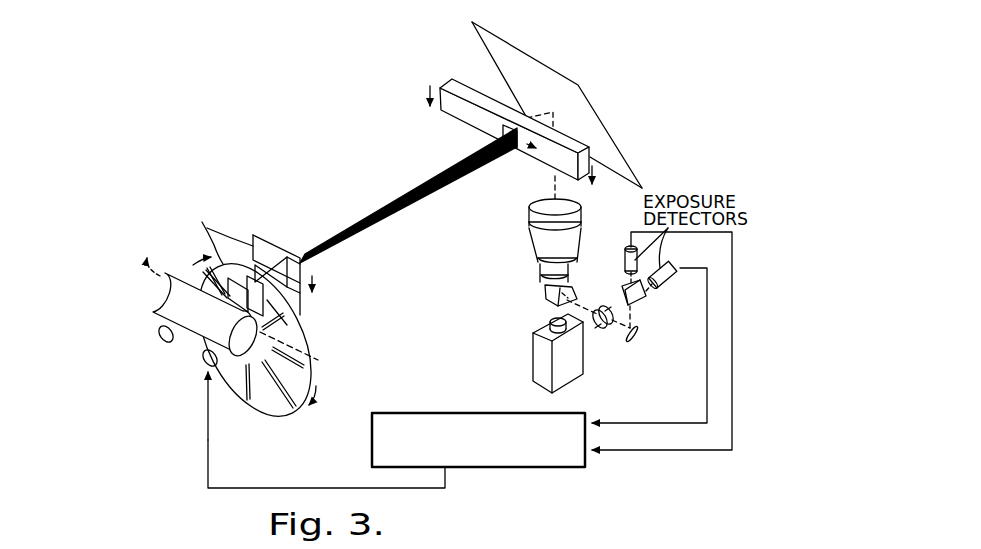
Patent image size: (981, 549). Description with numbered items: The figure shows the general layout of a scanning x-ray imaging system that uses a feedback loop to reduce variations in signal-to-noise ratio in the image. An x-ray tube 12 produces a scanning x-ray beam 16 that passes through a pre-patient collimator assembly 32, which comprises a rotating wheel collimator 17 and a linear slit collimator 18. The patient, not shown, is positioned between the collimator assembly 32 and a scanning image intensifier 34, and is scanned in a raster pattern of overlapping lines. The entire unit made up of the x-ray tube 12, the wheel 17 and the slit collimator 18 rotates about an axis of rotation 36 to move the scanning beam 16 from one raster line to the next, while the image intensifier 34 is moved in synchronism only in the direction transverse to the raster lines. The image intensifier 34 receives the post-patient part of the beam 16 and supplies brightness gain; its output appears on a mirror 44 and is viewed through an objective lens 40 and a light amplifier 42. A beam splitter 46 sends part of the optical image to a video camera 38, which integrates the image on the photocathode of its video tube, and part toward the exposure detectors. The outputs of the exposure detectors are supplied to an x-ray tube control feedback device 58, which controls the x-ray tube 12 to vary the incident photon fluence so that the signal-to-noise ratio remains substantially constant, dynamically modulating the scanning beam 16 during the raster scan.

The mirror 44 is at (497, 47).
The scanning image intensifier 34 is at (453, 118).
The scanning x-ray beam 16 is at (370, 226).
The rotating wheel collimator 17 is at (267, 403).
The x-ray tube 12 is at (203, 317).
The pre-patient collimator assembly 32 is at (217, 242).
The linear slit collimator 18 is at (297, 300).
The axis of rotation 36 is at (135, 263).
The objective lens 40 is at (535, 224).
The light amplifier 42 is at (547, 265).
The beam splitter 46 is at (548, 295).
The video camera 38 is at (543, 367).
The x-ray tube control feedback device 58 is at (535, 460).